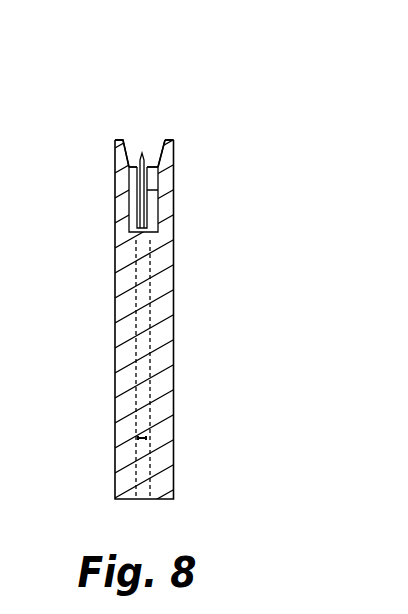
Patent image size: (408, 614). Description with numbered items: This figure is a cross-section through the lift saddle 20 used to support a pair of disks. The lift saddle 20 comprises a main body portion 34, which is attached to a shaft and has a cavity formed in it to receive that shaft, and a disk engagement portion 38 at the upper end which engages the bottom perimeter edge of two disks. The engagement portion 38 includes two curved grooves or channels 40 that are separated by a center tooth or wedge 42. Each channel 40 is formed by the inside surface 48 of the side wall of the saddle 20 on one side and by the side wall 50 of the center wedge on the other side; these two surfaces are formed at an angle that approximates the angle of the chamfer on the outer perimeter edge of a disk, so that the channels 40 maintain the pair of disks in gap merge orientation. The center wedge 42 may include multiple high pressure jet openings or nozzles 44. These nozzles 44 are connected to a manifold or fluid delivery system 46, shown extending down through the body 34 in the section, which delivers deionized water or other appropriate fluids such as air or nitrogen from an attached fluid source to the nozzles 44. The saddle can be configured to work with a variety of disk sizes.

The lift saddle 20 is at (188, 405).
The main body portion 34 is at (175, 346).
The disk engagement portion 38 is at (177, 112).
The curved grooves or channels 40 is at (132, 137).
The center tooth or wedge 42 is at (143, 148).
The high pressure jet openings or nozzles 44 is at (138, 238).
The manifold or fluid delivery system 46 is at (143, 392).
The inside surface of the saddle side wall 48 is at (118, 155).
The side wall of the center wedge 50 is at (141, 183).